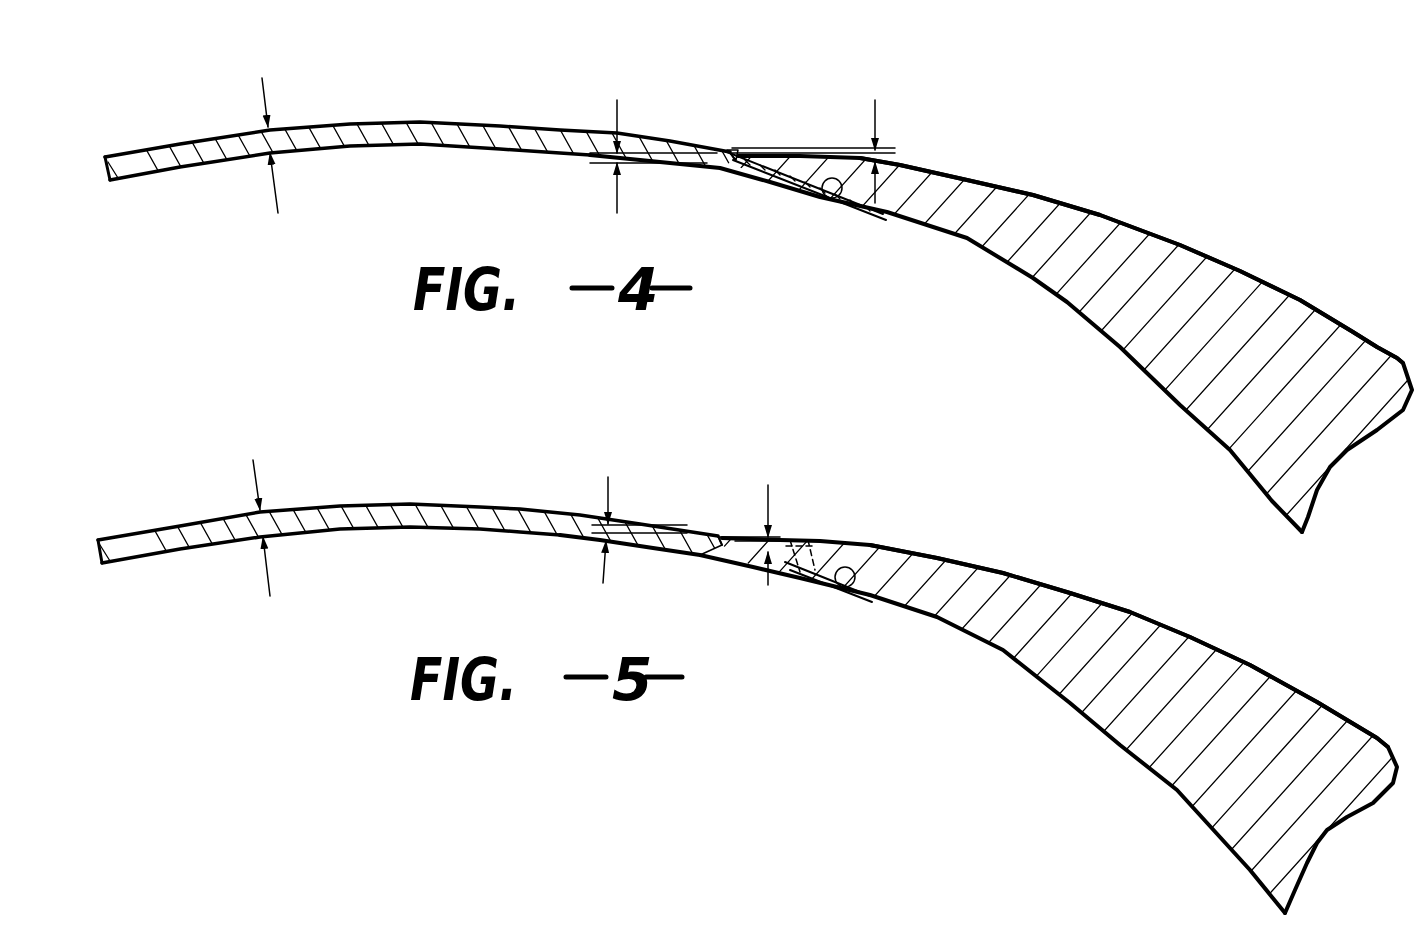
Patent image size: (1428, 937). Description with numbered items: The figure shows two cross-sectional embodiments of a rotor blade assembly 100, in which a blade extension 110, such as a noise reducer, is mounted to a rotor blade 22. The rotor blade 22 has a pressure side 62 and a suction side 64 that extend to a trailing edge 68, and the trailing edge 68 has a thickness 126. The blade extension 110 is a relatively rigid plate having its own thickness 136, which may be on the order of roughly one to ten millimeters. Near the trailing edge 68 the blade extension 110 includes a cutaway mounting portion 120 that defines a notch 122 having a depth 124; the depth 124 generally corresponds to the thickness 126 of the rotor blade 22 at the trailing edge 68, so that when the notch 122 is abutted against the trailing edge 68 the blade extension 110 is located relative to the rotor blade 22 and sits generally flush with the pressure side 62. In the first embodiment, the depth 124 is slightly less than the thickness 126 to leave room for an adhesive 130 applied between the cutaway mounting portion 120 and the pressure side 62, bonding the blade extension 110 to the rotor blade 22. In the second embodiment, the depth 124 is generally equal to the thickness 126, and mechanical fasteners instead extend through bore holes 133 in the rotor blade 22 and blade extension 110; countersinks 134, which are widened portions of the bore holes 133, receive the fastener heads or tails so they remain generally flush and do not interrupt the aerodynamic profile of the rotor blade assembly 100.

In FIG. 4, the rotor blade 22 is at (1262, 275).
In FIG. 5, the rotor blade 22 is at (1199, 636).
In FIG. 4, the pressure side 62 is at (1064, 312).
In FIG. 5, the pressure side 62 is at (1097, 732).
In FIG. 4, the suction side 64 is at (1311, 304).
In FIG. 5, the suction side 64 is at (1275, 670).
In FIG. 4, the trailing edge 68 is at (733, 143).
In FIG. 5, the trailing edge 68 is at (718, 525).
In FIG. 4, the rotor blade assembly 100 is at (1168, 195).
In FIG. 5, the rotor blade assembly 100 is at (1045, 527).
In FIG. 4, the blade extension 110 is at (455, 118).
In FIG. 5, the blade extension 110 is at (440, 503).
In FIG. 4, the cutaway mounting portion 120 is at (846, 205).
In FIG. 5, the cutaway mounting portion 120 is at (860, 587).
In FIG. 4, the notch 122 is at (722, 149).
In FIG. 5, the notch 122 is at (700, 532).
In FIG. 4, the depth 124 is at (615, 108).
In FIG. 5, the depth 124 is at (605, 492).
In FIG. 4, the thickness 126 is at (877, 112).
In FIG. 5, the thickness 126 is at (773, 497).
In FIG. 4, the adhesive 130 is at (790, 190).
In FIG. 5, the bore holes 133 is at (830, 556).
In FIG. 5, the countersinks 134 is at (803, 545).
In FIG. 4, the thickness 136 is at (262, 88).
In FIG. 5, the thickness 136 is at (253, 473).